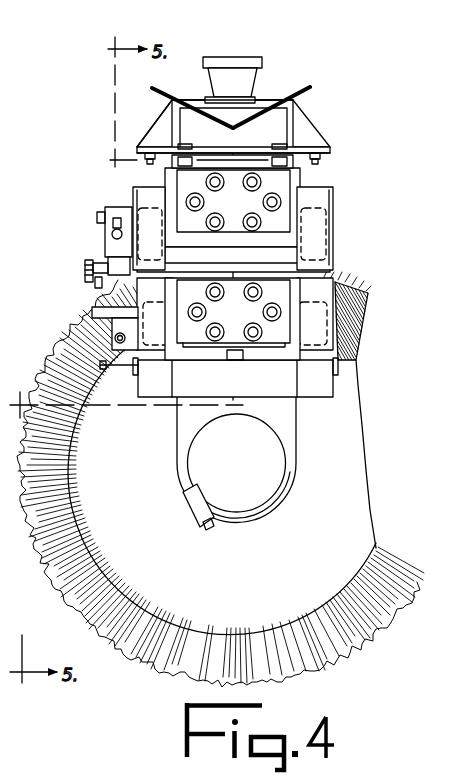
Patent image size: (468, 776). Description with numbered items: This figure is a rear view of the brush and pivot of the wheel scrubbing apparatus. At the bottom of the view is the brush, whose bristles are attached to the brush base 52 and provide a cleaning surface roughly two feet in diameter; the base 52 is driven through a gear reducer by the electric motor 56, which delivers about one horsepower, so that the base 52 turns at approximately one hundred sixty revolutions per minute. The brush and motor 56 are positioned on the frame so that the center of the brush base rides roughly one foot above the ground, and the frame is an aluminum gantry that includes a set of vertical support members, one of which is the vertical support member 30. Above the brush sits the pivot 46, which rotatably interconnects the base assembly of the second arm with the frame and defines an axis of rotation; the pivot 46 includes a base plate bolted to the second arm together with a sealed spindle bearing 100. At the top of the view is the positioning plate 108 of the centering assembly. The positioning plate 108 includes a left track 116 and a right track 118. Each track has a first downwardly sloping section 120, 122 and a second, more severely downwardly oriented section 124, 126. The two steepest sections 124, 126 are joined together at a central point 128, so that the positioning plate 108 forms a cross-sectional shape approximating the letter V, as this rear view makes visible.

The vertical support member 30 is at (173, 652).
The brush base 52 is at (160, 578).
The electric motor 56 is at (251, 498).
The pivot 46 is at (286, 61).
The sealed spindle bearing 100 is at (240, 55).
The positioning plate 108 is at (105, 107).
The left track 116 is at (142, 110).
The right track 118 is at (316, 110).
The first downwardly sloping section 120 is at (162, 84).
The first downwardly sloping section 122 is at (312, 80).
The second downwardly oriented section 124 is at (228, 121).
The second downwardly oriented section 126 is at (246, 120).
The central point 128 is at (222, 133).